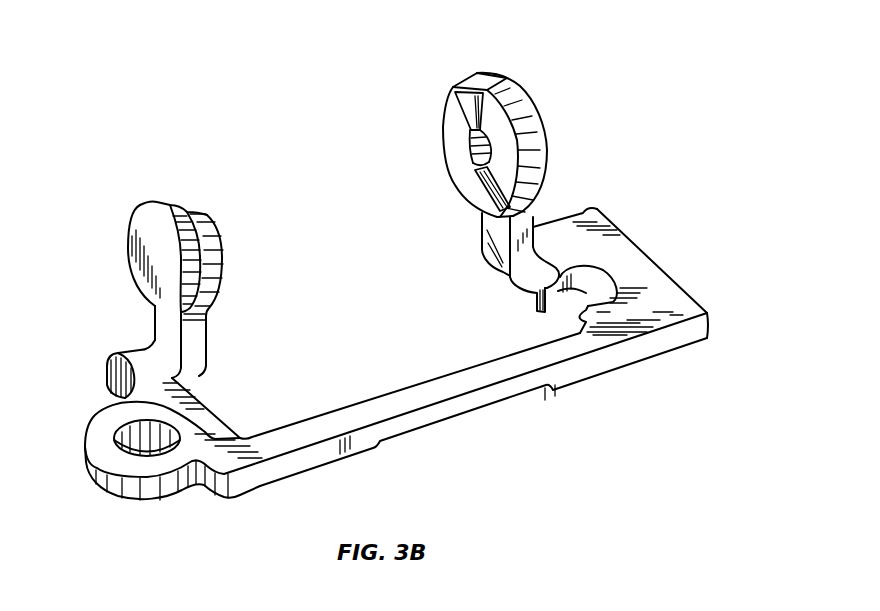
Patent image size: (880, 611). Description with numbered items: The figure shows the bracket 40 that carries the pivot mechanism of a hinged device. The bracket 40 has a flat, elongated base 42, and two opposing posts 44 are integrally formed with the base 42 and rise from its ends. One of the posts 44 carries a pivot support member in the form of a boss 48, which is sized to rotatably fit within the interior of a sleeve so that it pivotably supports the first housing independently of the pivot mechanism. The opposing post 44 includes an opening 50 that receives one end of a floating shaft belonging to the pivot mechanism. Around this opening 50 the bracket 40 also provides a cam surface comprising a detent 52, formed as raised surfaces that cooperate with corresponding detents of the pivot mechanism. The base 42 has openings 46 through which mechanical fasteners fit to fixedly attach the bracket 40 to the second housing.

The bracket 40 is at (270, 112).
The base 42 is at (437, 392).
The posts 44 is at (162, 207).
The openings 46 is at (150, 447).
The boss 48 is at (205, 232).
The opening 50 is at (493, 140).
The detent 52 is at (480, 188).